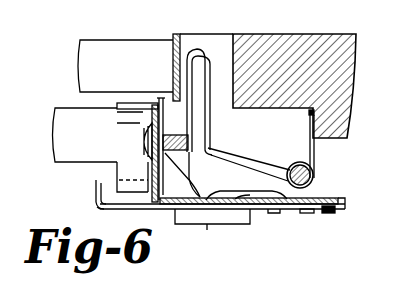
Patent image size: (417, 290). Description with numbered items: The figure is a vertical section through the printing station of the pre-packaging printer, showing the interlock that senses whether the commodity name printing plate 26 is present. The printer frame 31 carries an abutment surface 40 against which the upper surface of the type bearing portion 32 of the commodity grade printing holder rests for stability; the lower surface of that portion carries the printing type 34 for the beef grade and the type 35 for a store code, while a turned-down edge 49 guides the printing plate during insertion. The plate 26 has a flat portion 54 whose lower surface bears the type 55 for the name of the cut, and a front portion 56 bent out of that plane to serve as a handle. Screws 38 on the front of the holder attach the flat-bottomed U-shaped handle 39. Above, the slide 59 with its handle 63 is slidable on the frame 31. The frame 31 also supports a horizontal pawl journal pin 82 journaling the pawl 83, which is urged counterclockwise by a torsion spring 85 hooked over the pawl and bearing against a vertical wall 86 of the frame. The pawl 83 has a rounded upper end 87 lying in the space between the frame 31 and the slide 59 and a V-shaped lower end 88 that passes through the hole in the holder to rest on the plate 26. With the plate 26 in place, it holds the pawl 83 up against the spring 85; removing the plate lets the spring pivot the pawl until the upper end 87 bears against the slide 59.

The commodity name printing plate 26 is at (96, 207).
The printer frame 31 is at (356, 40).
The type bearing portion 32 is at (342, 206).
The printing type 34 is at (332, 213).
The type 35 is at (308, 214).
The screws 38 is at (138, 137).
The handle 39 is at (53, 140).
The abutment surface 40 is at (338, 200).
The turned-down edge 49 is at (205, 225).
The flat portion 54 is at (138, 209).
The type 55 is at (286, 214).
The front portion 56 is at (94, 196).
The slide 59 is at (176, 35).
The handle 63 is at (80, 62).
The pawl journal pin 82 is at (313, 176).
The pawl 83 is at (210, 150).
The torsion spring 85 is at (310, 145).
The vertical wall 86 is at (309, 112).
The rounded upper pawl end 87 is at (205, 50).
The V-shaped lower pawl end 88 is at (208, 200).